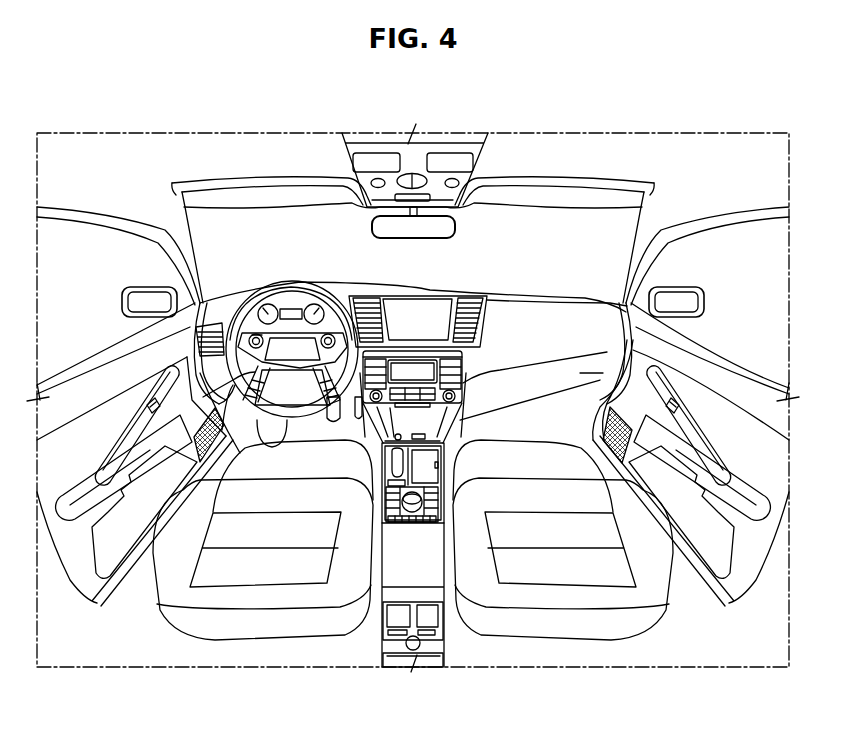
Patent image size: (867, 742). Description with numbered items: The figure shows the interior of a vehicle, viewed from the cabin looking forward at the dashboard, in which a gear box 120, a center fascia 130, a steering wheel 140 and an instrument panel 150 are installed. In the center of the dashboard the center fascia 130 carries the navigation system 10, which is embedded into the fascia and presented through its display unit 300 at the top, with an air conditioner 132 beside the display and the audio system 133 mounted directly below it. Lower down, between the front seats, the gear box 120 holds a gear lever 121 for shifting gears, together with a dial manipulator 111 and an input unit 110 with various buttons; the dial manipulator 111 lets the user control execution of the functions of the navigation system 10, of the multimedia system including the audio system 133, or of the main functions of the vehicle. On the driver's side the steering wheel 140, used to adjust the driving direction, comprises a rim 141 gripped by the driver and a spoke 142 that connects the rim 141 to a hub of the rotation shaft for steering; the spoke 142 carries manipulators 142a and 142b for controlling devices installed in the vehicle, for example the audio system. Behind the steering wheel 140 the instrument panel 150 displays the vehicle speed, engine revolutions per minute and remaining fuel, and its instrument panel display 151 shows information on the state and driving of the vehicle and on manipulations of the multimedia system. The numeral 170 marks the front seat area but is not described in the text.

The navigation system 10 is at (432, 293).
The input unit 110 is at (408, 504).
The dial manipulator 111 is at (401, 501).
The gear box 120 is at (416, 483).
The gear lever 121 is at (387, 456).
The center fascia 130 is at (497, 281).
The air conditioner 132 is at (484, 316).
The audio system 133 is at (469, 357).
The steering wheel 140 is at (291, 278).
The rim 141 is at (270, 284).
The spoke 142 is at (193, 350).
The manipulator 142a is at (258, 336).
The manipulator 142b is at (351, 298).
The instrument panel 150 is at (274, 303).
The instrument panel display 151 is at (300, 313).
The seat 170 is at (268, 625).
The display unit 300 is at (422, 300).